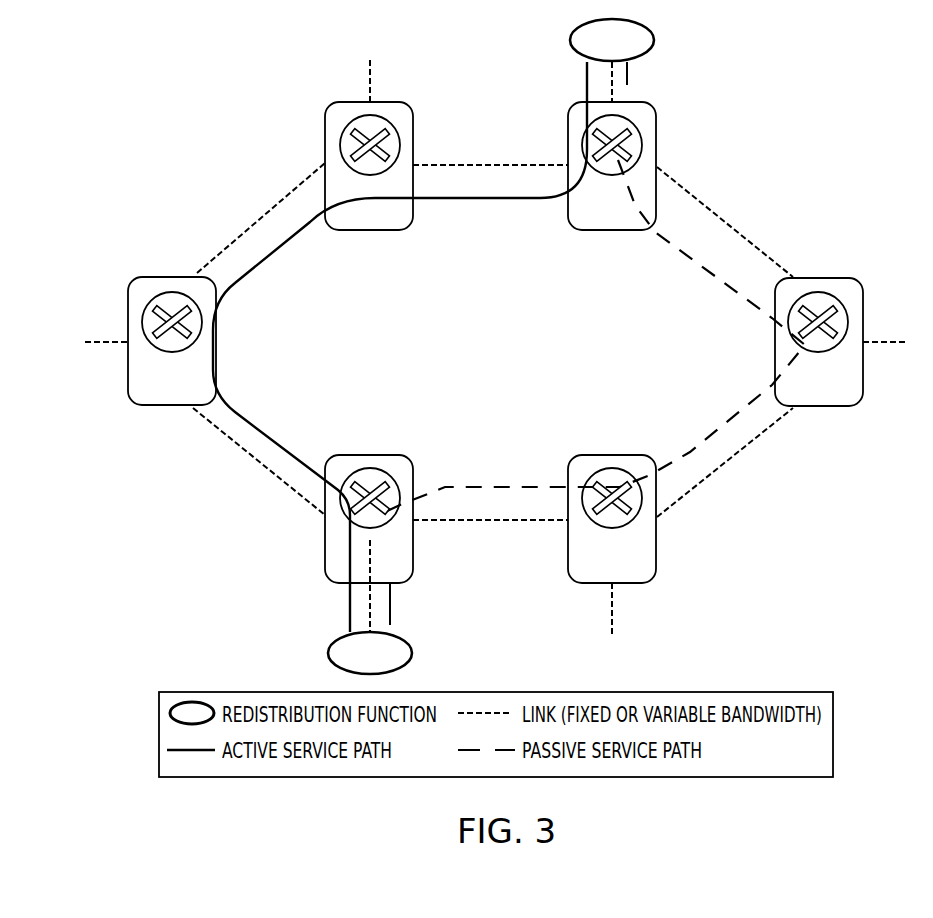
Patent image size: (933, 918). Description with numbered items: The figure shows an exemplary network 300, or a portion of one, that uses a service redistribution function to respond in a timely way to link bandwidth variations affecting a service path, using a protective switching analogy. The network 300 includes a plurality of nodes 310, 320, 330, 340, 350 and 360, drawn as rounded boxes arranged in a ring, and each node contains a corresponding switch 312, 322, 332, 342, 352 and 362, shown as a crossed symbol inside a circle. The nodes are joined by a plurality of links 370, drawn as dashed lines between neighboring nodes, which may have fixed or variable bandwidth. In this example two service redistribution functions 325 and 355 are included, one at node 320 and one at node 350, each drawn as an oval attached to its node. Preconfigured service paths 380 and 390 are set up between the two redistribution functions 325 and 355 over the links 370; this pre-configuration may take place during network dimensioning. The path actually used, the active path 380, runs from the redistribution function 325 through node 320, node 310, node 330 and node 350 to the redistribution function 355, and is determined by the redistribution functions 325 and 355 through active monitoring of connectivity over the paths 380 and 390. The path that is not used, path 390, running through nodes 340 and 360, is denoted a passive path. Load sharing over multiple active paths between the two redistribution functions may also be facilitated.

The network 300 is at (150, 136).
The node 310 is at (338, 165).
The switch 312 is at (340, 160).
The node 320 is at (602, 165).
The switch 322 is at (641, 137).
The redistribution function 325 is at (655, 43).
The node 330 is at (145, 340).
The switch 332 is at (143, 338).
The node 340 is at (849, 341).
The switch 342 is at (846, 338).
The node 350 is at (362, 519).
The switch 352 is at (398, 514).
The redistribution function 355 is at (329, 653).
The node 360 is at (607, 519).
The switch 362 is at (640, 515).
The links 370 is at (723, 207).
The active service path 380 is at (282, 242).
The passive service path 390 is at (738, 428).